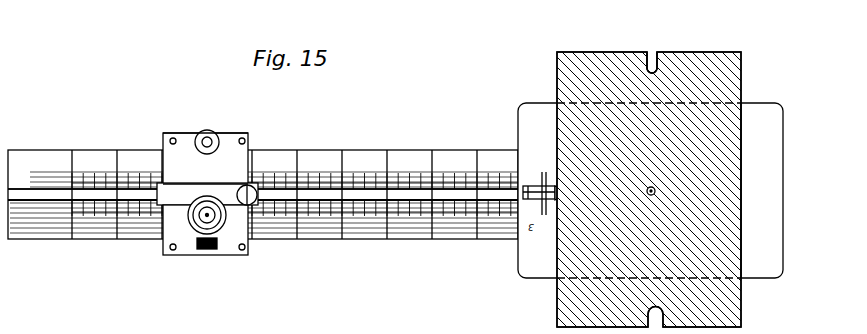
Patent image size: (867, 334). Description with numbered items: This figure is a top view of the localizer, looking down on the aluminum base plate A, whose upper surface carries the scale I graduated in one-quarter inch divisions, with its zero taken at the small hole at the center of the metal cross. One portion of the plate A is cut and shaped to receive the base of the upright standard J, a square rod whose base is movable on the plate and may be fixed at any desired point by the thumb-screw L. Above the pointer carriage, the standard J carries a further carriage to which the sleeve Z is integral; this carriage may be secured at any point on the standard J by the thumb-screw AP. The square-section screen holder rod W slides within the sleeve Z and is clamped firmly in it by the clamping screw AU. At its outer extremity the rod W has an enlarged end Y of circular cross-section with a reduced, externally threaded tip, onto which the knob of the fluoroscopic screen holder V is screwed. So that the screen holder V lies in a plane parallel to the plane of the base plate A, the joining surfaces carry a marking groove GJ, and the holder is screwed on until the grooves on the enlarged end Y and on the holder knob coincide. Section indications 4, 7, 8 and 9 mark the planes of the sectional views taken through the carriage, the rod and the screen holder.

The scale I is at (78, 150).
The screen holder rod W is at (67, 195).
The plate A is at (746, 280).
The fluoroscopic screen holder V is at (732, 52).
The enlarged end Y is at (552, 231).
The groove GJ is at (561, 192).
The section line 9-9 / notch 9 is at (653, 52).
The section line 8- 8 is at (732, 195).
The sleeve Z is at (181, 187).
The thumb-screw L is at (209, 140).
The clamping screw AU is at (255, 187).
The upright standard J is at (203, 226).
The thumb-screw AP is at (221, 250).
The section line 4- 4 is at (203, 125).
The section line 7- 7 is at (165, 142).